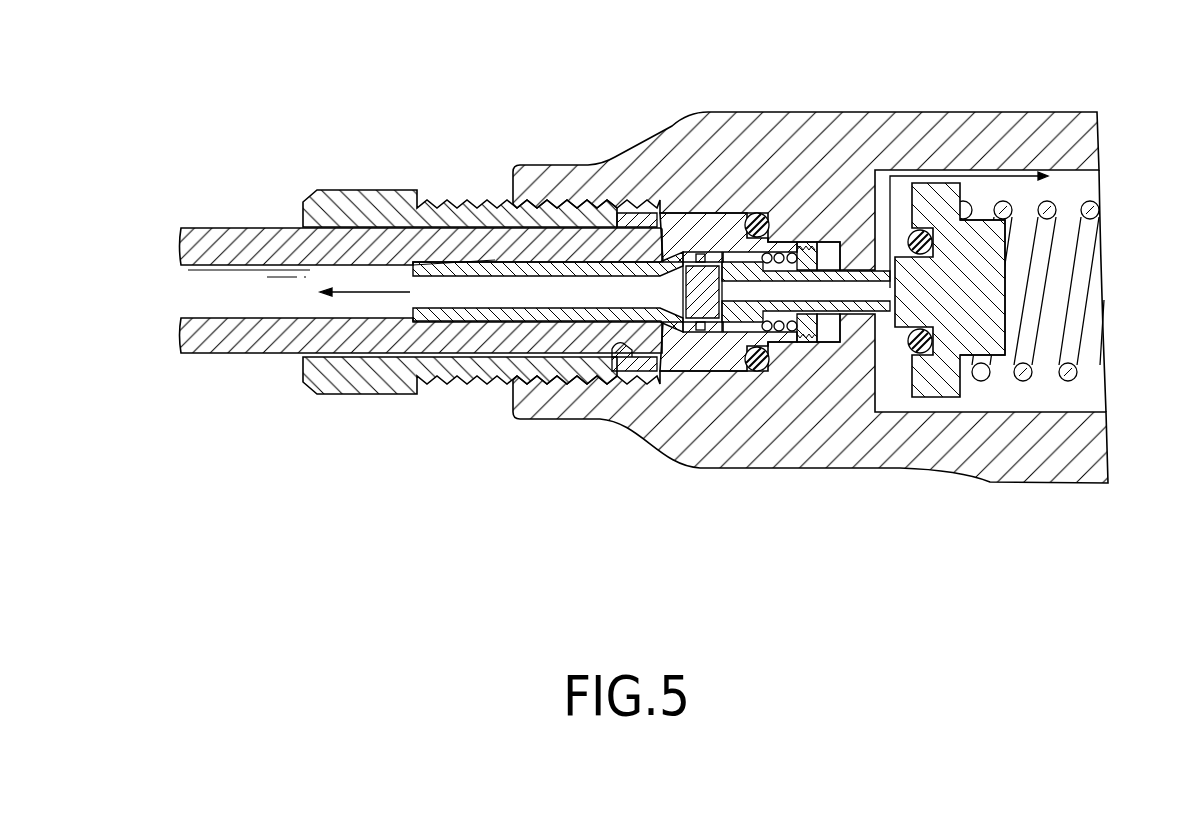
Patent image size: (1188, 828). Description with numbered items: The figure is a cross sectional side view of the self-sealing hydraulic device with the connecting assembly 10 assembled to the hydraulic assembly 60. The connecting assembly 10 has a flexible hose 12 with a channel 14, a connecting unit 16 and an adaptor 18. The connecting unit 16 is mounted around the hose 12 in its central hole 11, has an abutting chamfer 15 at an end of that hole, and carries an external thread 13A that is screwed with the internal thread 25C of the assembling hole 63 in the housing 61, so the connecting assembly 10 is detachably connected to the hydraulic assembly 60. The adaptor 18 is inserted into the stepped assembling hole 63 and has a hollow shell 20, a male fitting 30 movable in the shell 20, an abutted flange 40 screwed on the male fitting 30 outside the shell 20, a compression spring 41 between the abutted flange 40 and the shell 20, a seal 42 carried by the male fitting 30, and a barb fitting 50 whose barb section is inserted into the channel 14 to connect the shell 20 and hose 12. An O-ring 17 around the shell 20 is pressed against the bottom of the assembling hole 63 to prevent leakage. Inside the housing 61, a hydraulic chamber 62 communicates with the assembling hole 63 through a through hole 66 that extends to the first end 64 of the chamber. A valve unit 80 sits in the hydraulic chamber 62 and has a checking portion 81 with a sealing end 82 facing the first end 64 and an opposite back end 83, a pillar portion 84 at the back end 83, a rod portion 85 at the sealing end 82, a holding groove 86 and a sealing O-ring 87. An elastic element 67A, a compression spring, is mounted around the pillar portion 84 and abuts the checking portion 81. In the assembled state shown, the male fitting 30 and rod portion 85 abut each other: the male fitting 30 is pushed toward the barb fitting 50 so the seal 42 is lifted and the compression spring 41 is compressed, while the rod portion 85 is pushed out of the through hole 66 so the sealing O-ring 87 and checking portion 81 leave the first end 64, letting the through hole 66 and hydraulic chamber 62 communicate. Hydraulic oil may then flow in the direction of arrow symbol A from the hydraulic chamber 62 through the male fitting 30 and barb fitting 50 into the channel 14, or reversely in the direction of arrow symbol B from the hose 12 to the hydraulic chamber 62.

The connecting assembly 10 is at (403, 310).
The central hole 11 is at (313, 340).
The hose 12 is at (272, 240).
The external thread 13A is at (470, 385).
The channel 14 is at (202, 317).
The abutting chamfer 15 is at (623, 345).
The connecting unit 16 is at (367, 205).
The O-ring 17 is at (748, 215).
The adaptor 18 is at (622, 209).
The shell 20 is at (737, 292).
The internal thread 25C is at (565, 362).
The male fitting 30 is at (692, 243).
The abutted flange 40 is at (805, 340).
The compression spring 41 is at (782, 332).
The seal 42 is at (698, 253).
The barb fitting 50 is at (572, 313).
The hydraulic assembly 60 is at (839, 255).
The housing 61 is at (1080, 140).
The hydraulic chamber 62 is at (1075, 398).
The assembling hole 63 is at (757, 212).
The first end 64 is at (893, 395).
The through hole 66 is at (830, 244).
The elastic element 67A is at (1098, 212).
The valve unit 80 is at (983, 327).
The checking portion 81 is at (945, 385).
The sealing end 82 is at (910, 192).
The back end 83 is at (966, 192).
The pillar portion 84 is at (992, 347).
The rod portion 85 is at (912, 335).
The holding groove 86 is at (890, 240).
The sealing O-ring 87 is at (923, 348).
The arrow symbol A is at (375, 293).
The arrow symbol B is at (1015, 181).